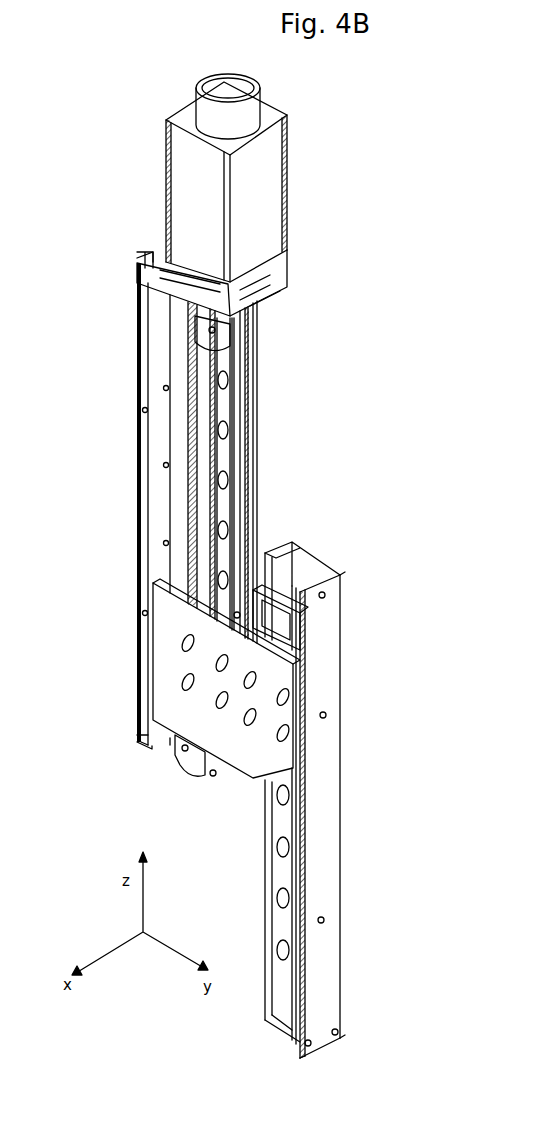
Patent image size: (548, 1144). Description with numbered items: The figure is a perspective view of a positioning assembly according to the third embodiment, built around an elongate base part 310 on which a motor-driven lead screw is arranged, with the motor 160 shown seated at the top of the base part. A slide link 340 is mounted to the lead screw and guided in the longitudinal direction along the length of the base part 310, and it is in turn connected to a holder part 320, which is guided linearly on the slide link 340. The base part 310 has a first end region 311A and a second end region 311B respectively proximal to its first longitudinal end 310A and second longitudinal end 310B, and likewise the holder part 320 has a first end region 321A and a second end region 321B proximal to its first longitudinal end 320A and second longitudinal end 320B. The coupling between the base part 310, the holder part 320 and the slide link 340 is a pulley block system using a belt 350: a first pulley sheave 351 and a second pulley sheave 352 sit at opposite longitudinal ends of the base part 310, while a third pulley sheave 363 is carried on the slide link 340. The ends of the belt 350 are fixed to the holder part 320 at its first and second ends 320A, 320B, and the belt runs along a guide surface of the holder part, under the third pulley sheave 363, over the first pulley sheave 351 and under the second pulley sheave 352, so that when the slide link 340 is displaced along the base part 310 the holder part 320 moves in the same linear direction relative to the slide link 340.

The motor 160 is at (218, 189).
The base part 310 is at (137, 274).
The first longitudinal end 310A is at (150, 262).
The second longitudinal end 310B is at (147, 748).
The first end region 311A is at (131, 297).
The second end region 311B is at (132, 728).
The holder part 320 is at (328, 683).
The first longitudinal end 320A is at (327, 573).
The second longitudinal end 320B is at (320, 1053).
The first end region 321A is at (348, 593).
The second end region 321B is at (348, 1024).
The slide link 340 is at (175, 622).
The belt 350 is at (240, 380).
The first pulley sheave 351 is at (217, 337).
The second pulley sheave 352 is at (195, 742).
The third pulley sheave 363 is at (258, 565).